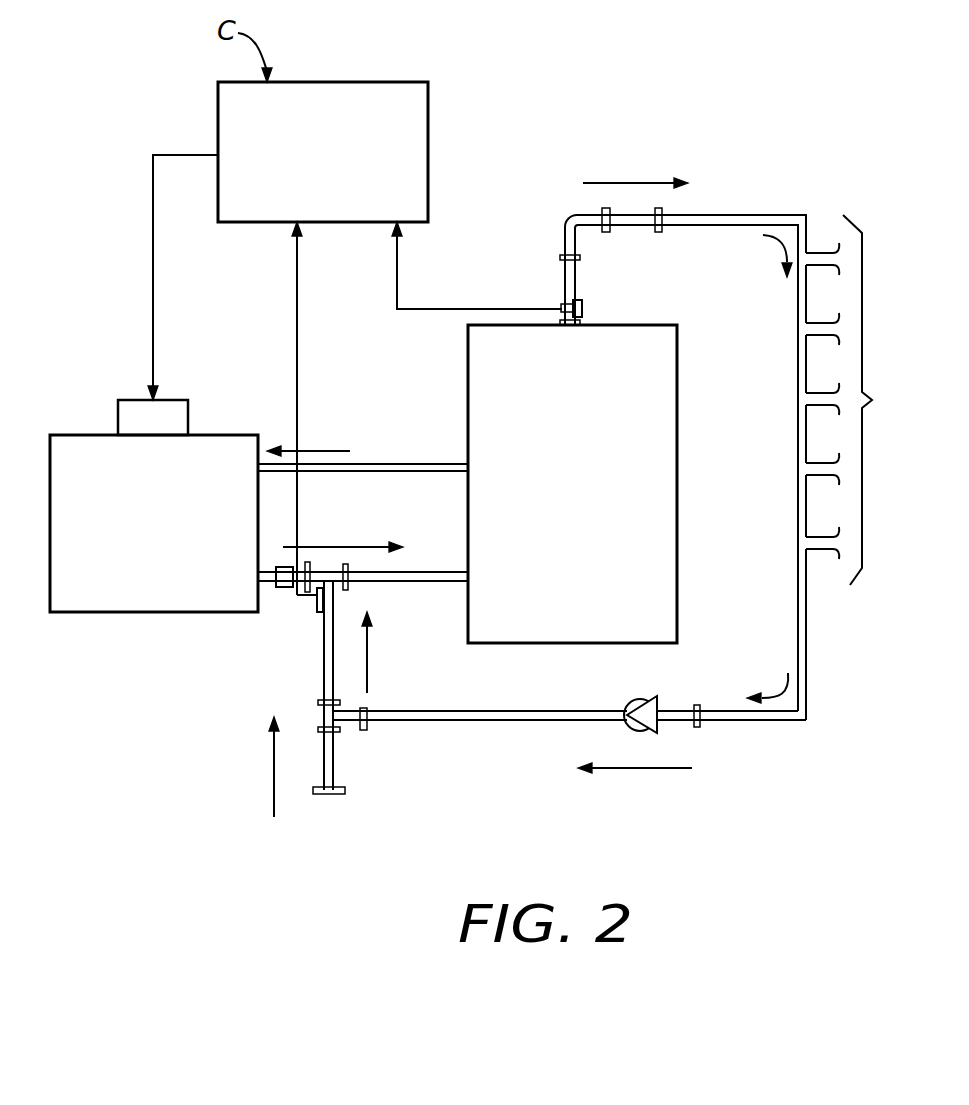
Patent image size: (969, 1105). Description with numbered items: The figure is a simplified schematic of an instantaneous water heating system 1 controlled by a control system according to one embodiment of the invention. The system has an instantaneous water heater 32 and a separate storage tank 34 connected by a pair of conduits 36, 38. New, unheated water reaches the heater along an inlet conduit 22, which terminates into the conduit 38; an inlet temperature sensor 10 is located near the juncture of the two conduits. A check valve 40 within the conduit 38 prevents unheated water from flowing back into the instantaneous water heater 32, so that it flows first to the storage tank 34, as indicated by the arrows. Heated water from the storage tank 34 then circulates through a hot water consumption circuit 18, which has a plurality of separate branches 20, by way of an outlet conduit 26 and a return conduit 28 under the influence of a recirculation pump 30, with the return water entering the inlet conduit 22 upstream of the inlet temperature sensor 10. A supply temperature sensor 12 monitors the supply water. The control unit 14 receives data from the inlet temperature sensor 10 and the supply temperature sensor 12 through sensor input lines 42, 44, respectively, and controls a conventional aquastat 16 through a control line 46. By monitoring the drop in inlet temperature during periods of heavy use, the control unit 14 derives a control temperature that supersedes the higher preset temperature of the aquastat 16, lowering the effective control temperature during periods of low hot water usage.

The water heating system 1 is at (489, 104).
The inlet temperature sensor 10 is at (317, 608).
The supply temperature sensor 12 is at (585, 306).
The control unit 14 is at (285, 82).
The aquastat 16 is at (130, 421).
The hot water consumption circuit 18 is at (872, 400).
The separate branches 20 is at (838, 257).
The inlet conduit 22 is at (322, 676).
The outlet conduit 26 is at (630, 226).
The return conduit 28 is at (485, 722).
The recirculation pump 30 is at (630, 702).
The instantaneous water heater 32 is at (123, 614).
The storage tank 34 is at (677, 437).
The conduit 36 is at (420, 464).
The conduit 38 is at (432, 572).
The check valve 40 is at (283, 588).
The sensor input line 42 is at (298, 328).
The sensor input line 44 is at (398, 270).
The control line 46 is at (150, 294).